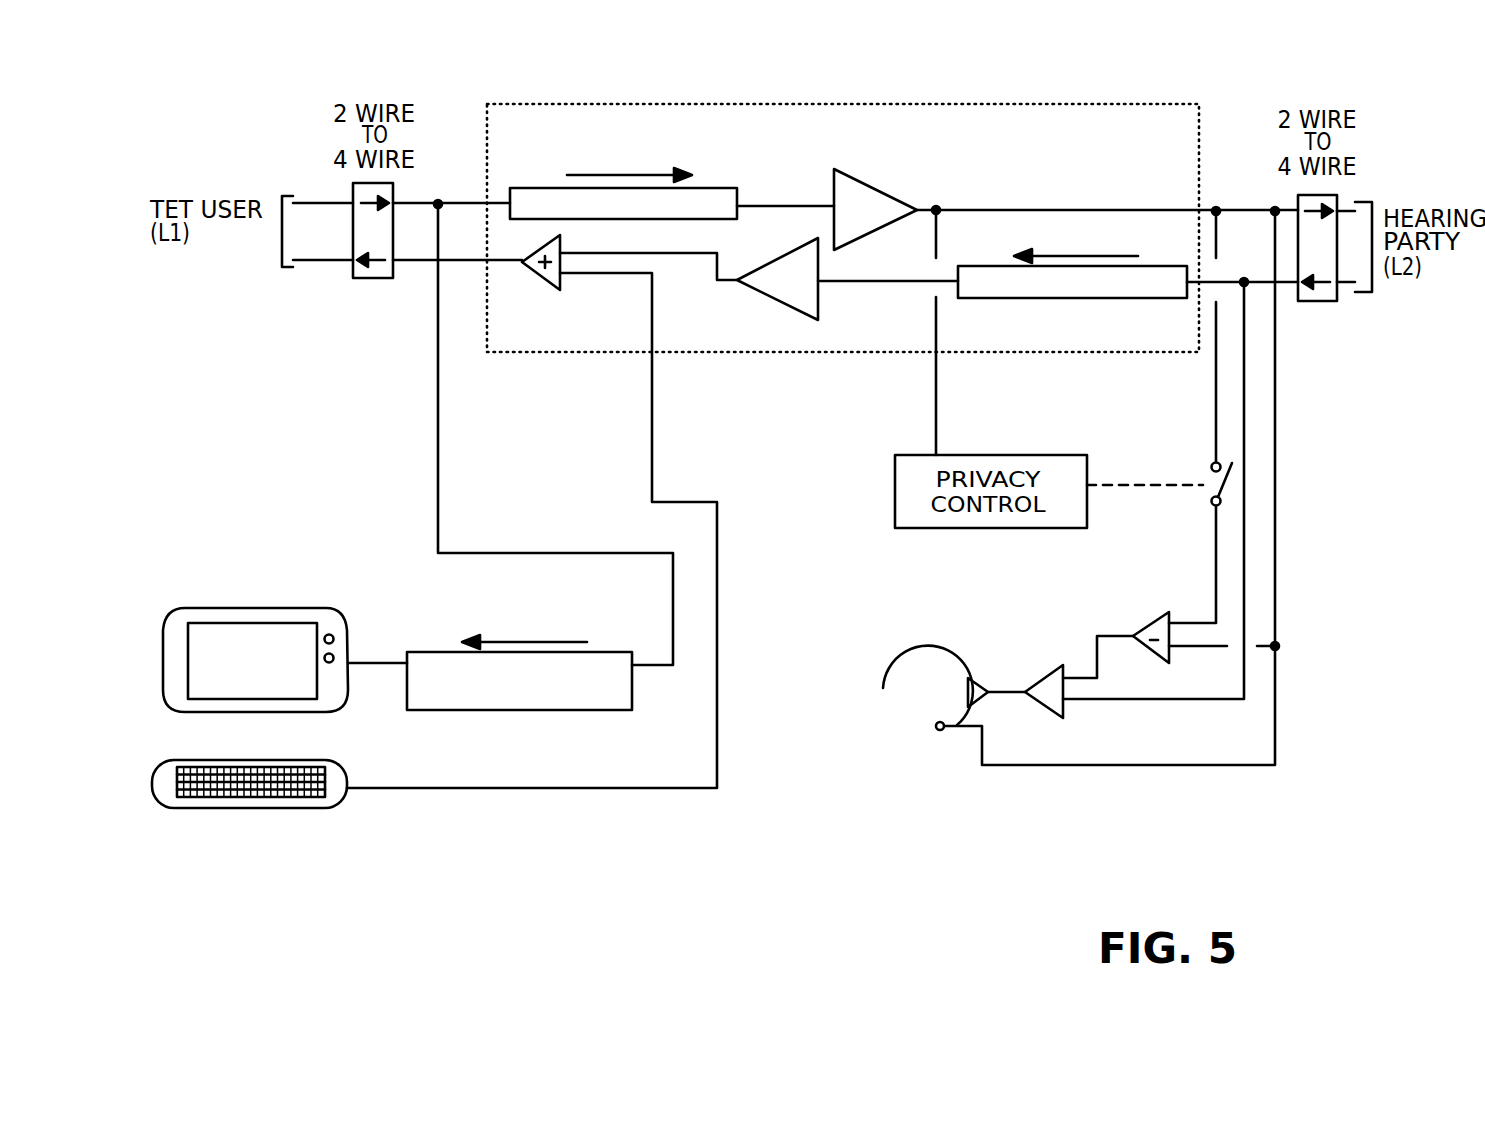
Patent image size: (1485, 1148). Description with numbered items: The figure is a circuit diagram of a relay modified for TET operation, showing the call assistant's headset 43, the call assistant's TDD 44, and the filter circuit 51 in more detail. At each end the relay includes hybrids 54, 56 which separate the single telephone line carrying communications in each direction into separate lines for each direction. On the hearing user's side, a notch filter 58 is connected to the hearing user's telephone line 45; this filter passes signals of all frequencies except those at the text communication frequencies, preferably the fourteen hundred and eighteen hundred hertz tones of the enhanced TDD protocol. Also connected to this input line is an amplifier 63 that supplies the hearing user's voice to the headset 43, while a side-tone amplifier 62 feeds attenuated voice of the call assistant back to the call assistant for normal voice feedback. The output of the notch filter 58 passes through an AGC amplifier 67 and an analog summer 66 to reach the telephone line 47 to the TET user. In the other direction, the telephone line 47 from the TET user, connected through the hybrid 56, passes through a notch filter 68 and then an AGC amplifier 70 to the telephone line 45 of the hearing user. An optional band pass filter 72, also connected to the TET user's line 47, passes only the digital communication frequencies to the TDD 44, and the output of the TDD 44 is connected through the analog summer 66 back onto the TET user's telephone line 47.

The headset 43 is at (948, 729).
The TDD 44 is at (343, 697).
The telephone line to the hearing user 45 is at (1375, 285).
The telephone line to the TET user 47 is at (280, 237).
The filter circuit 51 is at (1157, 356).
The hybrid 54 is at (1312, 295).
The hybrid 56 is at (365, 272).
The notch filter 58 is at (1153, 292).
The side-tone amplifier 62 is at (1157, 648).
The amplifier 63 is at (1050, 703).
The analog summer 66 is at (552, 277).
The AGC amplifier (return path) 67 is at (805, 260).
The notch filter 68 is at (732, 195).
The AGC amplifier 70 is at (852, 190).
The band pass filter 72 is at (627, 663).